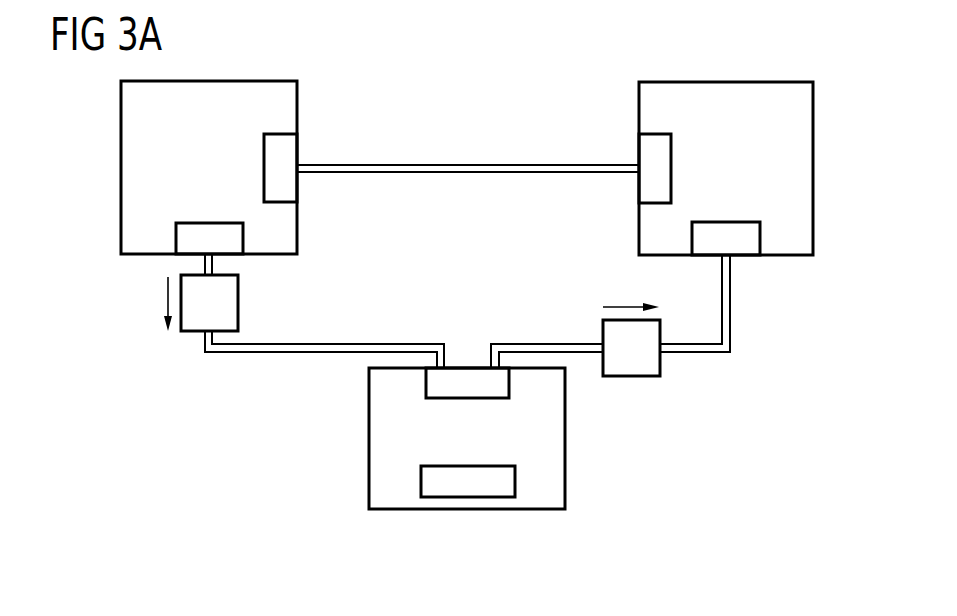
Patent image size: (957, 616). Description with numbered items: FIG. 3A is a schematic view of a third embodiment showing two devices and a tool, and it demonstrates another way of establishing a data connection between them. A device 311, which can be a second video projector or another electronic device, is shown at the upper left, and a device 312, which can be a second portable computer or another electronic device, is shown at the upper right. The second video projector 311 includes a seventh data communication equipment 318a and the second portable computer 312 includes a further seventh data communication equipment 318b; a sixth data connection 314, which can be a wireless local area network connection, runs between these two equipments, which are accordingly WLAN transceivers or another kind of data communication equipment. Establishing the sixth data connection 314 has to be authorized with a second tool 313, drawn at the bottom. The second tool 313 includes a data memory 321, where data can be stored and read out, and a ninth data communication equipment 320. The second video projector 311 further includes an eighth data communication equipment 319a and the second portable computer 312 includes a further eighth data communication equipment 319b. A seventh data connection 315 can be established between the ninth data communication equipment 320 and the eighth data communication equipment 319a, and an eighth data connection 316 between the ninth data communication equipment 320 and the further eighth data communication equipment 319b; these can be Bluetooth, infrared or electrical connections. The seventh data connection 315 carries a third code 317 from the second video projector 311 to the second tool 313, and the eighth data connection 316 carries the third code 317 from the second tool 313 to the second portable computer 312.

The second video projector 311 is at (121, 162).
The second portable computer 312 is at (813, 166).
The second tool 313 is at (467, 509).
The sixth data connection 314 is at (466, 164).
The seventh data connection 315 is at (286, 355).
The eighth data connection 316 is at (730, 305).
The third code 317 is at (238, 301).
The seventh data communication equipment 318a is at (266, 144).
The further seventh data communication equipment 318b is at (663, 144).
The eighth data communication equipment 319a is at (208, 232).
The further eighth data communication equipment 319b is at (726, 232).
The ninth data communication equipment 320 is at (467, 378).
The data memory 321 is at (466, 466).